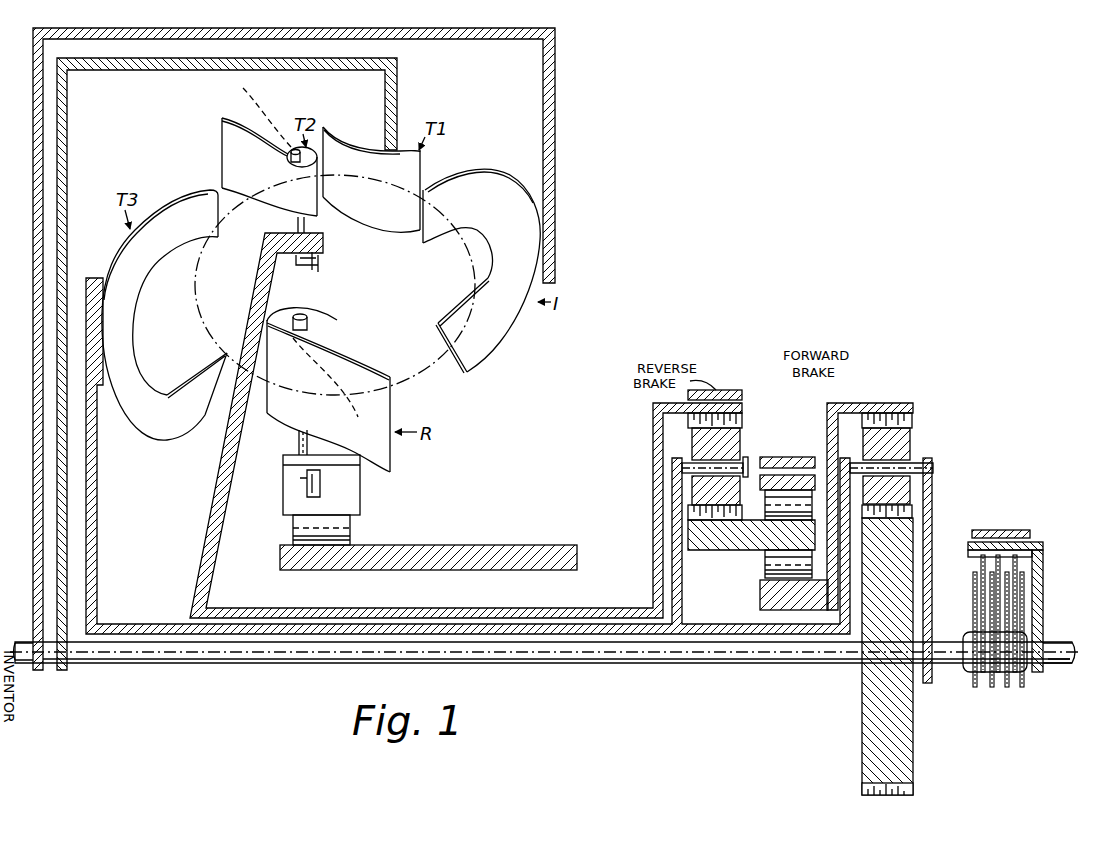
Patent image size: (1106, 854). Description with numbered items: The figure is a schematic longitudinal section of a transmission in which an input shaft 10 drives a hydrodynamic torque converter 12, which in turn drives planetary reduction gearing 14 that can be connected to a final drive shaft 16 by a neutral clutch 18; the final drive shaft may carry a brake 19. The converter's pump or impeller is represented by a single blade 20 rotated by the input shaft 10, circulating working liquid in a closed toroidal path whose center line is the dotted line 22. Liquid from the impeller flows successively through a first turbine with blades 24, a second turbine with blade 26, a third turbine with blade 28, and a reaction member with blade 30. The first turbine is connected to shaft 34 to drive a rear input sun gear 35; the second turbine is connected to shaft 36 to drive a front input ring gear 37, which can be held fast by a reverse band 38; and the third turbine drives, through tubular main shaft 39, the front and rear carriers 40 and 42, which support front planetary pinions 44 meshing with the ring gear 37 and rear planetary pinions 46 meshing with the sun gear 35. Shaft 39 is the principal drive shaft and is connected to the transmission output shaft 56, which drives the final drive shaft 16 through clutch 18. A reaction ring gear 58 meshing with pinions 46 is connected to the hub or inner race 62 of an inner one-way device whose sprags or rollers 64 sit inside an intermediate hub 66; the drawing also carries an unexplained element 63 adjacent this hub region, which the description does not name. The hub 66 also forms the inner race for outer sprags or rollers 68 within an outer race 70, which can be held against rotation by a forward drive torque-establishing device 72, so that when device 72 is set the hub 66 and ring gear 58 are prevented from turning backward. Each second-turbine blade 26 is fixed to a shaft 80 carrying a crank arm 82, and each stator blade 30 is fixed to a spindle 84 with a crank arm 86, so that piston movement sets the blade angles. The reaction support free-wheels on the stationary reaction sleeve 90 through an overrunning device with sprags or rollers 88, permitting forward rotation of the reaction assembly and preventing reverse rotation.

The input shaft 10 is at (22, 663).
The hydrodynamic torque converter 12 is at (400, 27).
The planetary reduction gearing 14 is at (876, 401).
The final drive shaft 16 is at (1047, 665).
The neutral clutch 18 is at (977, 582).
The brake 19 is at (999, 531).
The blade 20 is at (506, 190).
The dotted line 22 is at (431, 388).
The blades 24 is at (390, 229).
The blade 26 is at (290, 170).
The blade 28 is at (184, 210).
The blade 30 is at (331, 402).
The shaft 34 is at (601, 663).
The rear input sun gear 35 is at (862, 726).
The shaft 36 is at (479, 607).
The front input ring gear 37 is at (743, 422).
The reverse band 38 is at (726, 392).
The shaft 39 is at (123, 624).
The front carrier 40 is at (690, 472).
The rear carrier 42 is at (932, 478).
The front planetary pinions 44 is at (692, 444).
The rear planetary pinions 46 is at (905, 446).
The transmission output shaft 56 is at (947, 665).
The reaction ring gear 58 is at (913, 418).
The hub or inner race 62 is at (761, 600).
The hub 63 is at (697, 550).
The sprags or rollers 64 is at (774, 563).
The intermediate hub 66 is at (722, 551).
The sprags or rollers 68 is at (776, 516).
The outer race 70 is at (789, 475).
The forward drive torque-establishing device 72 is at (782, 456).
The shaft 80 is at (289, 160).
The crank arms 82 is at (321, 268).
The pivots or spindles 84 is at (310, 323).
The crank arm 86 is at (305, 488).
The sprags or rollers 88 is at (351, 525).
The reaction sleeve 90 is at (506, 545).